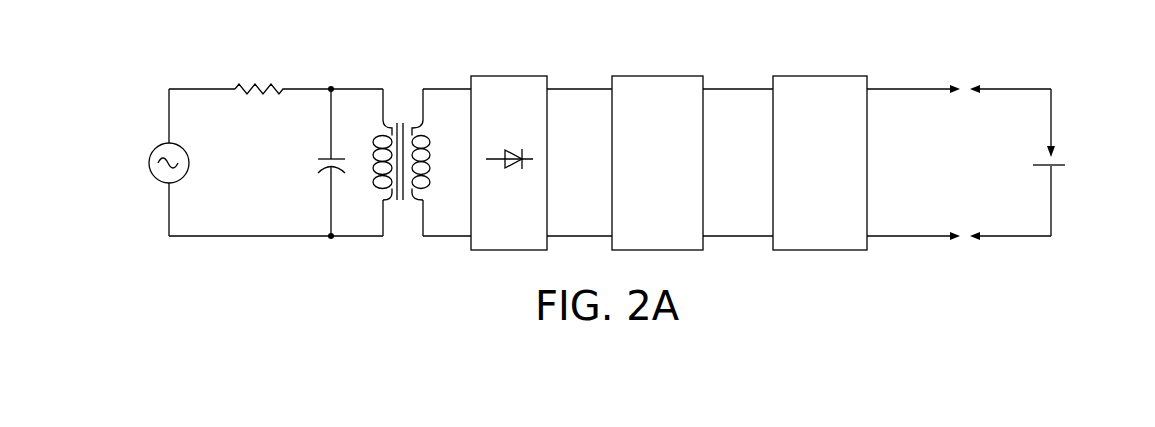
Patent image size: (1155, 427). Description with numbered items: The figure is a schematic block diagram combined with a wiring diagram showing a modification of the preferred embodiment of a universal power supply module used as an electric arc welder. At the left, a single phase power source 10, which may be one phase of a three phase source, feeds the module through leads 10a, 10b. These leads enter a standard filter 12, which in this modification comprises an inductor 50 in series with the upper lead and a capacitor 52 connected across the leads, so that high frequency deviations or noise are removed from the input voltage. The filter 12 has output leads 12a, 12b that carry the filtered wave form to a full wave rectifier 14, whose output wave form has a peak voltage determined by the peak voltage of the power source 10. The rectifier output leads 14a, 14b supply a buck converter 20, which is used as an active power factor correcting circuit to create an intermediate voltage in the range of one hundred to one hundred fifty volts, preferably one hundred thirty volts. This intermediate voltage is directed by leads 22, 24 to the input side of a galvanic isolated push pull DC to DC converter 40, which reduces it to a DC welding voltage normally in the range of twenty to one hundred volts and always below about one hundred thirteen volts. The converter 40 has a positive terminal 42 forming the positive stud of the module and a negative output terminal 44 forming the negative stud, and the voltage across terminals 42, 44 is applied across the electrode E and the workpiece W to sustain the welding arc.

The single phase power source 10 is at (147, 183).
The lead 10a is at (190, 88).
The lead 10b is at (193, 238).
The inductor 50 is at (257, 83).
The capacitor 52 is at (317, 160).
The filter 12 is at (343, 52).
The output lead 12a is at (370, 87).
The output lead 12b is at (370, 238).
The full wave rectifier 14 is at (501, 65).
The output lead 14a is at (579, 88).
The output lead 14b is at (575, 235).
The buck converter 20 is at (659, 66).
The lead 22 is at (734, 88).
The lead 24 is at (725, 235).
The push pull DC to DC converter 40 is at (832, 67).
The positive terminal 42 is at (938, 86).
The negative output terminal 44 is at (938, 238).
The electrode E is at (1060, 152).
The workpiece W is at (1058, 168).